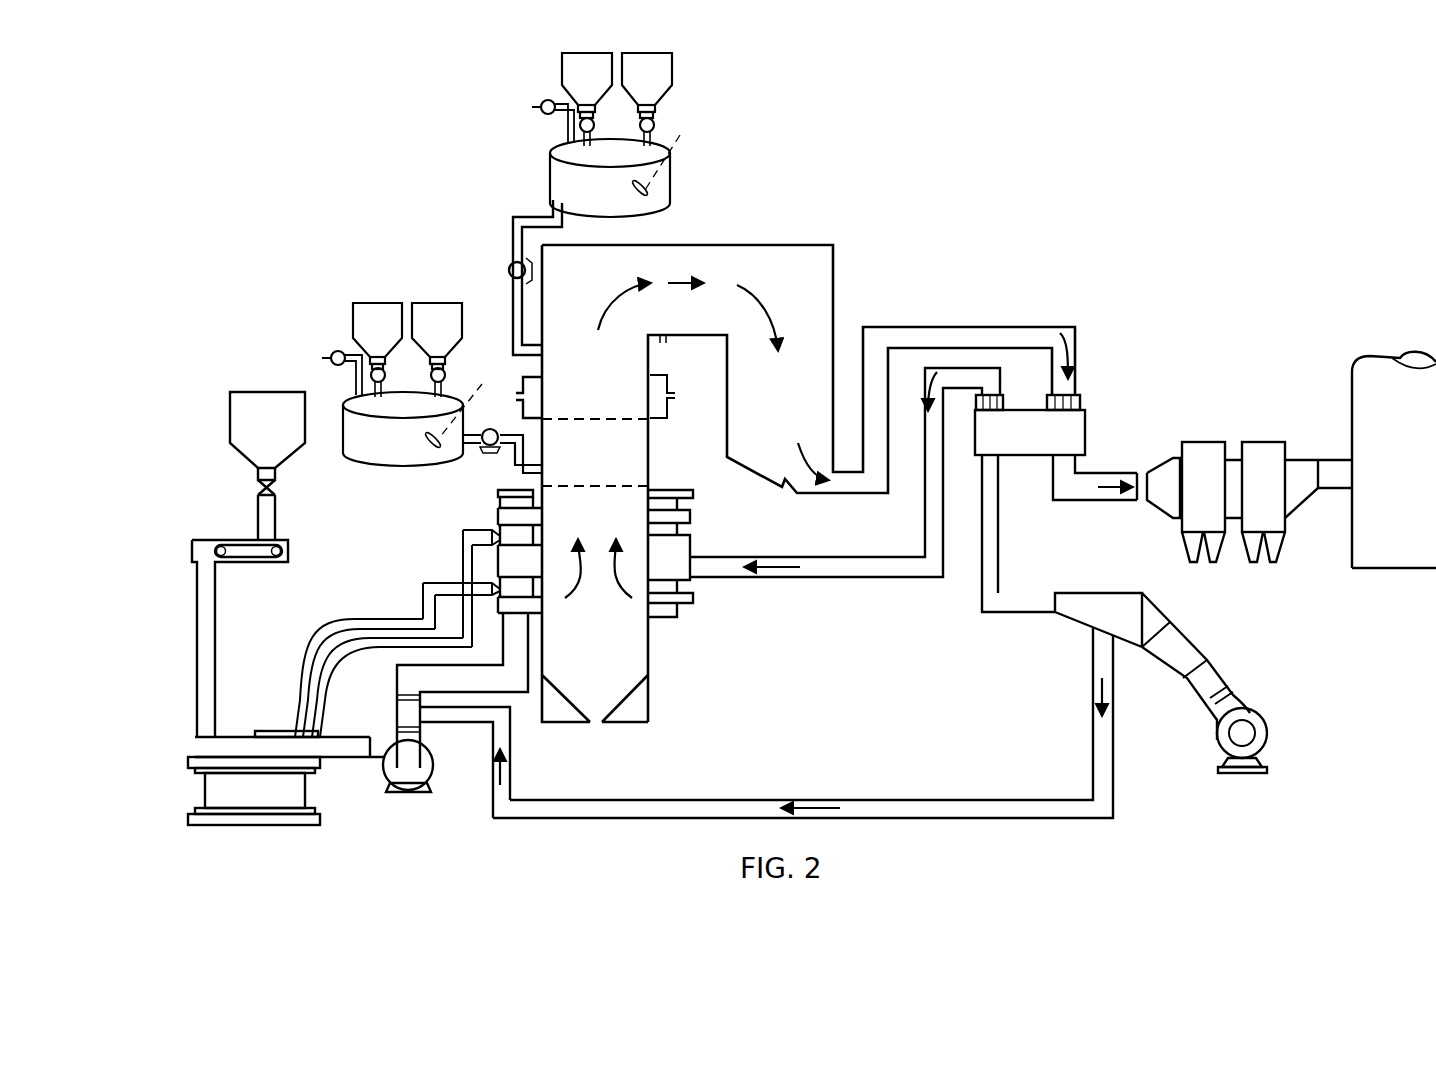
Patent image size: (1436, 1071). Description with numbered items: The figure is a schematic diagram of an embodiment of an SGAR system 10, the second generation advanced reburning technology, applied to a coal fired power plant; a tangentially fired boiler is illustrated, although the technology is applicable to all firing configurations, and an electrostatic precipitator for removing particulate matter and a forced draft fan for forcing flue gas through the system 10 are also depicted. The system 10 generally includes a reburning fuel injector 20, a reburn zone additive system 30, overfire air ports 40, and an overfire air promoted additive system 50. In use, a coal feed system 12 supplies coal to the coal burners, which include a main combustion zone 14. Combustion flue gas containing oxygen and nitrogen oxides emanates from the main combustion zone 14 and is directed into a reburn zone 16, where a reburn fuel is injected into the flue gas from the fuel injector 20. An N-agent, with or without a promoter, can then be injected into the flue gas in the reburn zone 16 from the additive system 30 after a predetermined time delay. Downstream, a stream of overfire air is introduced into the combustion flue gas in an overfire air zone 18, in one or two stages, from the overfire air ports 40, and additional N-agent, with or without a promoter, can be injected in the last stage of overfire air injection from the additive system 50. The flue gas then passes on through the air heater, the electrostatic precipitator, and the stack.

The SGAR system 10 is at (378, 158).
The coal feed system 12 is at (232, 445).
The main combustion zone 14 is at (612, 645).
The reburn zone 16 is at (637, 446).
The overfire air zone 18 is at (590, 353).
The reburning fuel injector 20 is at (500, 494).
The reburn zone additive system 30 is at (343, 418).
The overfire air ports 40 is at (517, 388).
The overfire air promoted additive system 50 is at (680, 133).